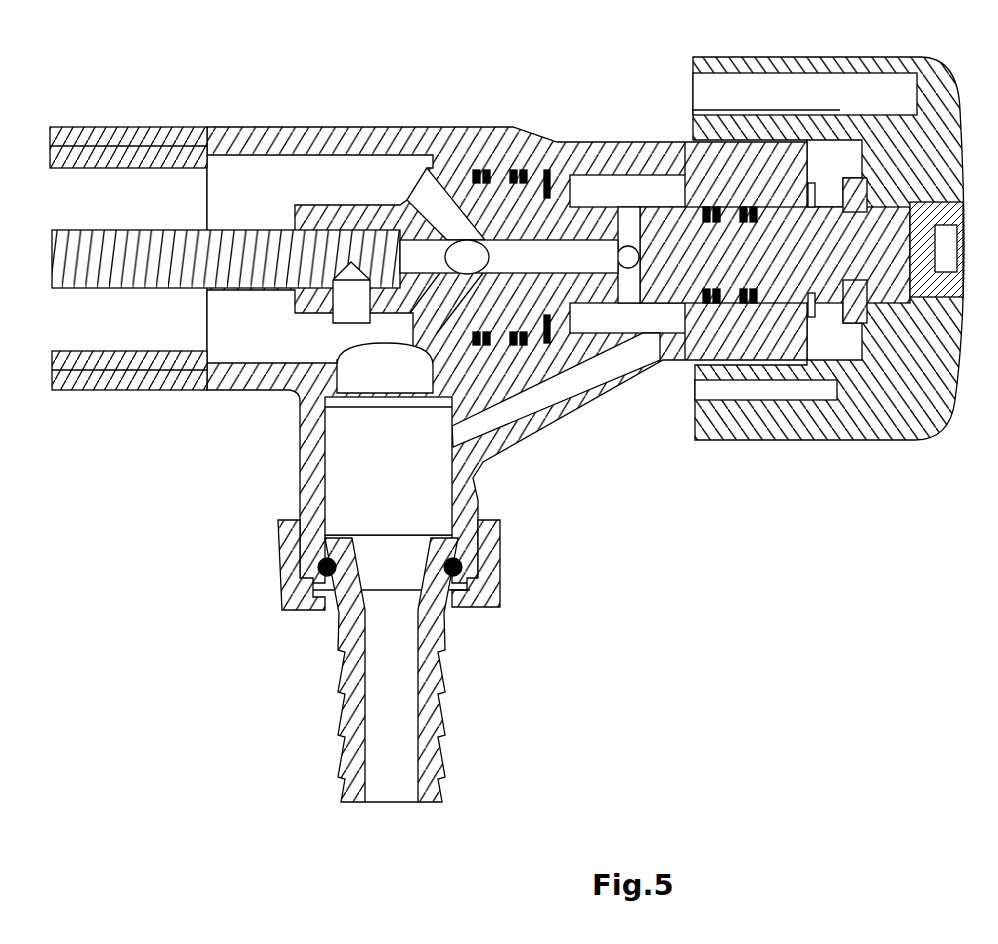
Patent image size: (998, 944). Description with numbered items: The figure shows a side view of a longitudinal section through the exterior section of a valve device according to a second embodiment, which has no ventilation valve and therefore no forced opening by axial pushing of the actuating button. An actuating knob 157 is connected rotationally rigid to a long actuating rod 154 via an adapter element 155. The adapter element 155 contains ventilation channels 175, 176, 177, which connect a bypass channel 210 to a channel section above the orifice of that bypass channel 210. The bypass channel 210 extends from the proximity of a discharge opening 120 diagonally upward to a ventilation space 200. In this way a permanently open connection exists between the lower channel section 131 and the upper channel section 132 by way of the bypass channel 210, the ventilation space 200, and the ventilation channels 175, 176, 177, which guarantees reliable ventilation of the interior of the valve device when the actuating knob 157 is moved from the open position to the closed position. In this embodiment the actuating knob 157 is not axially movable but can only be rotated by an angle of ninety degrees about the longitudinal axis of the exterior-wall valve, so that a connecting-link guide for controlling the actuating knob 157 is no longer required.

The discharge opening 120 is at (395, 825).
The lower channel section 131 is at (357, 472).
The upper channel section 132 is at (332, 180).
The actuating rod 154 is at (267, 257).
The adapter element 155 is at (470, 196).
The actuating knob 157 is at (808, 420).
The ventilation channel 175 is at (550, 257).
The ventilation channel 176 is at (423, 190).
The ventilation channel 177 is at (628, 216).
The ventilation space 200 is at (644, 316).
The bypass channel 210 is at (520, 395).